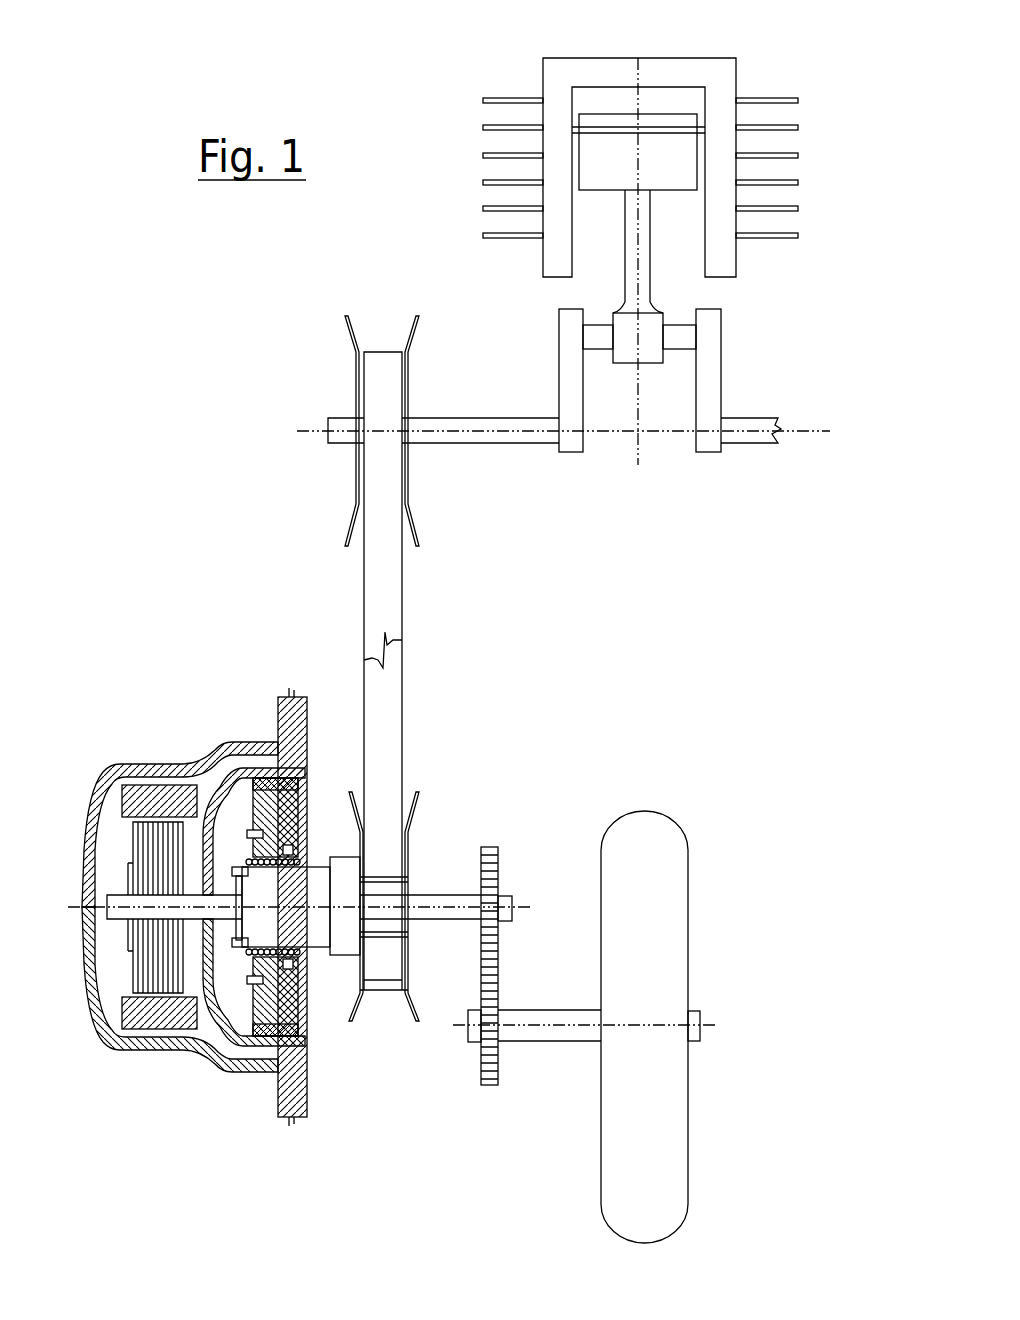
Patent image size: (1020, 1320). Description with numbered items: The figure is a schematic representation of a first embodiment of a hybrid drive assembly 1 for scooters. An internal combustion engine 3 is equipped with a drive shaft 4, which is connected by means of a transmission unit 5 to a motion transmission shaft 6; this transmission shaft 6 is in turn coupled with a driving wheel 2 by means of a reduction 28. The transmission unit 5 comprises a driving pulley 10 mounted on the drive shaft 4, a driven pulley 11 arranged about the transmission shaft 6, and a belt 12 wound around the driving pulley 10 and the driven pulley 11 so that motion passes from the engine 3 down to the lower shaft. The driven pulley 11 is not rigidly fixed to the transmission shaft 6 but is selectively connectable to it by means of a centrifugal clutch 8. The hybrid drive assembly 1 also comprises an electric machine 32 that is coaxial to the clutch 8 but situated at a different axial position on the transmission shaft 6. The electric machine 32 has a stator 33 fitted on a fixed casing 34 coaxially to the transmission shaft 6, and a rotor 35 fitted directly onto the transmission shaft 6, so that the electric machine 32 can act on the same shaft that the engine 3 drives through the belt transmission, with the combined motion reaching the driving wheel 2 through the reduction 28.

The hybrid drive assembly 1 is at (570, 603).
The driving wheel 2 is at (660, 1183).
The internal combustion engine 3 is at (737, 65).
The drive shaft 4 is at (468, 427).
The transmission unit 5 is at (323, 592).
The motion transmission shaft 6 is at (436, 896).
The centrifugal clutch 8 is at (174, 904).
The driving pulley 10 is at (352, 340).
The driven pulley 11 is at (360, 1012).
The belt 12 is at (382, 702).
The reduction 28 is at (498, 964).
The electric machine 32 is at (122, 832).
The stator 33 is at (148, 805).
The fixed casing 34 is at (147, 779).
The rotor 35 is at (160, 853).